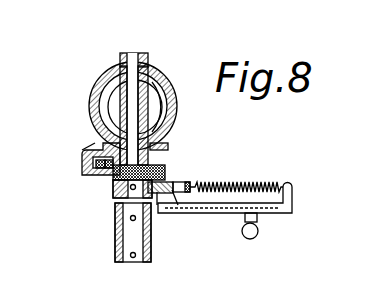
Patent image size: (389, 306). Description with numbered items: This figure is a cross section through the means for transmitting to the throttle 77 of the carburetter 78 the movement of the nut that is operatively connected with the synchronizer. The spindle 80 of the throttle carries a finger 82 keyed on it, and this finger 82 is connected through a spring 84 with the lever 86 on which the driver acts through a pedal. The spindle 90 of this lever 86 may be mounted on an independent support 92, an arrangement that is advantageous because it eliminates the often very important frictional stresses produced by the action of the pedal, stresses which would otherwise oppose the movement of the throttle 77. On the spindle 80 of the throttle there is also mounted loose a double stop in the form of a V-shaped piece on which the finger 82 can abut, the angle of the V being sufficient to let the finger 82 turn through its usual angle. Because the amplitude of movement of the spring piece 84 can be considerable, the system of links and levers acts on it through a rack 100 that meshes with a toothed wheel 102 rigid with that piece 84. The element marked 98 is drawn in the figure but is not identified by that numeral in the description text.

The carburetter 78 is at (107, 76).
The throttle 77 is at (150, 108).
The spindle of the throttle 80 is at (148, 146).
The rack 100 is at (103, 165).
The toothed wheel 102 is at (110, 172).
The spindle of the lever 90 is at (115, 240).
The independent support 92 is at (148, 238).
The finger 82 is at (183, 211).
The spring 84 is at (232, 184).
The lever 86 is at (274, 214).
The pin 98 is at (173, 194).